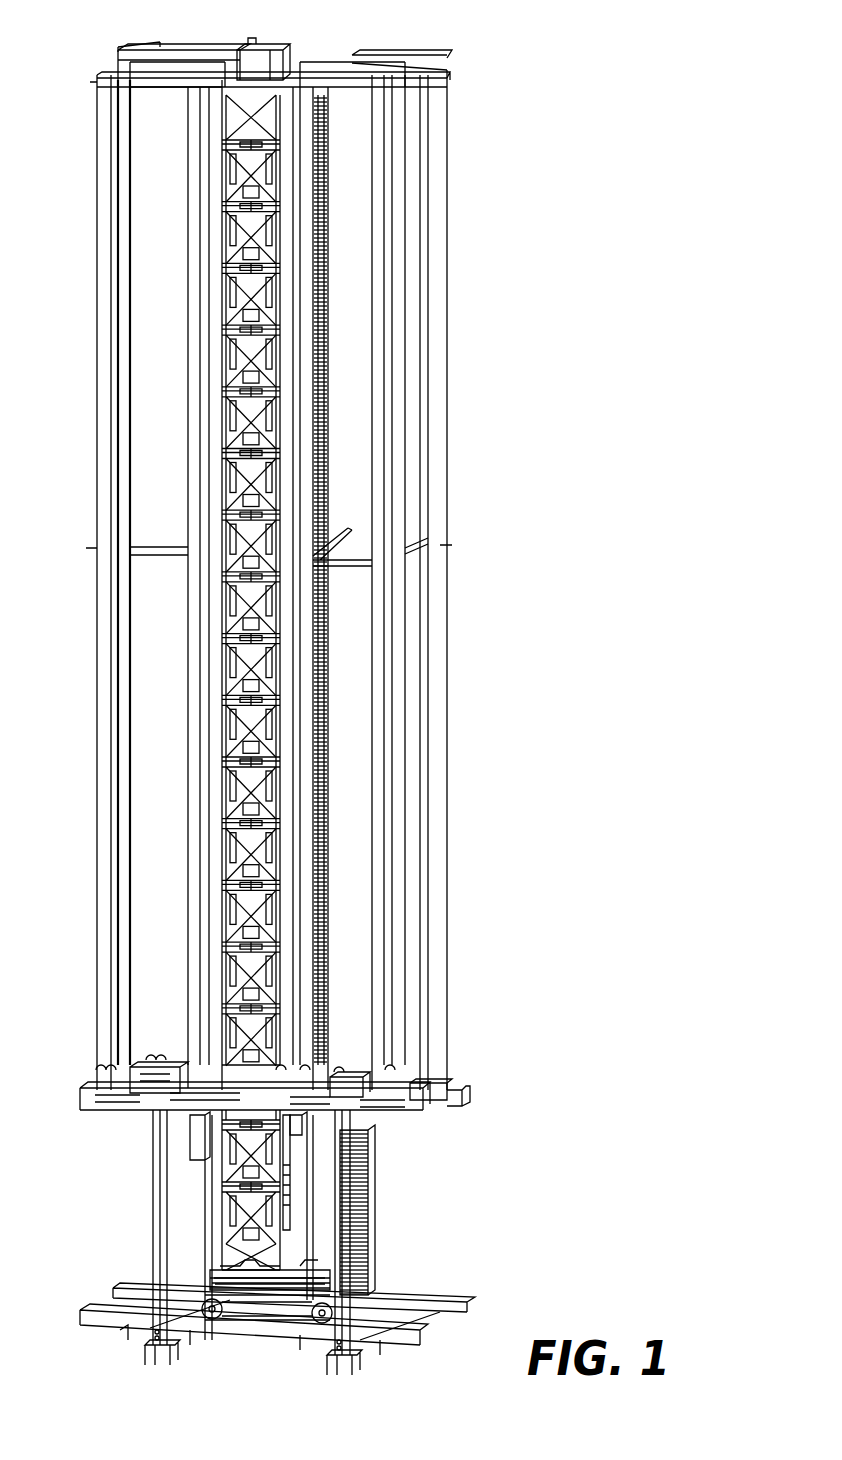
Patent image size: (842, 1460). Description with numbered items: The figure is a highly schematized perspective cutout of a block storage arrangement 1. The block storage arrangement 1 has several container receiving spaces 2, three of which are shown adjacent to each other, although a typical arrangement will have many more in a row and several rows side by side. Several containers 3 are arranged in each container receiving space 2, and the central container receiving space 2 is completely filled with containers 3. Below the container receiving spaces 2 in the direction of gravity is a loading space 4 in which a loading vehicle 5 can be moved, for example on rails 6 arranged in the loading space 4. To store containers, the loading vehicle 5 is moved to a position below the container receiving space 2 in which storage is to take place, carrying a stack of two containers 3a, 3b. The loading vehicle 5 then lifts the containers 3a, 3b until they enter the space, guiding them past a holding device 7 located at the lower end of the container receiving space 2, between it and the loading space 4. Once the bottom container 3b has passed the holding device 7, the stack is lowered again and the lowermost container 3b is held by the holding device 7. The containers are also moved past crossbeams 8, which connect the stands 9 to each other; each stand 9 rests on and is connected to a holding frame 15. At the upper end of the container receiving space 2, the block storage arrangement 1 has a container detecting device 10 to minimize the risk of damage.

The block storage arrangement 1 is at (512, 70).
The container receiving space 2 is at (180, 68).
The container 3 is at (282, 70).
The container to be stored 3a is at (270, 1165).
The bottom container 3b is at (262, 1222).
The loading space 4 is at (140, 1185).
The loading vehicle 5 is at (260, 1318).
The rails 6 is at (450, 1305).
The holding device 7 is at (348, 1068).
The crossbeams 8 is at (175, 87).
The stand 9 is at (188, 193).
The container detecting device 10 is at (250, 66).
The holding frame 15 is at (468, 1098).